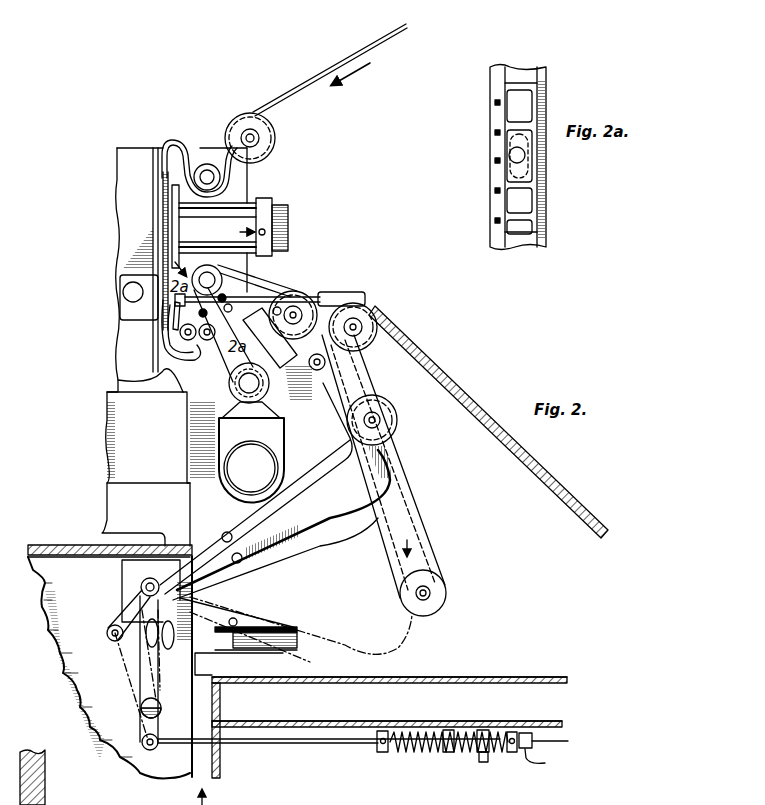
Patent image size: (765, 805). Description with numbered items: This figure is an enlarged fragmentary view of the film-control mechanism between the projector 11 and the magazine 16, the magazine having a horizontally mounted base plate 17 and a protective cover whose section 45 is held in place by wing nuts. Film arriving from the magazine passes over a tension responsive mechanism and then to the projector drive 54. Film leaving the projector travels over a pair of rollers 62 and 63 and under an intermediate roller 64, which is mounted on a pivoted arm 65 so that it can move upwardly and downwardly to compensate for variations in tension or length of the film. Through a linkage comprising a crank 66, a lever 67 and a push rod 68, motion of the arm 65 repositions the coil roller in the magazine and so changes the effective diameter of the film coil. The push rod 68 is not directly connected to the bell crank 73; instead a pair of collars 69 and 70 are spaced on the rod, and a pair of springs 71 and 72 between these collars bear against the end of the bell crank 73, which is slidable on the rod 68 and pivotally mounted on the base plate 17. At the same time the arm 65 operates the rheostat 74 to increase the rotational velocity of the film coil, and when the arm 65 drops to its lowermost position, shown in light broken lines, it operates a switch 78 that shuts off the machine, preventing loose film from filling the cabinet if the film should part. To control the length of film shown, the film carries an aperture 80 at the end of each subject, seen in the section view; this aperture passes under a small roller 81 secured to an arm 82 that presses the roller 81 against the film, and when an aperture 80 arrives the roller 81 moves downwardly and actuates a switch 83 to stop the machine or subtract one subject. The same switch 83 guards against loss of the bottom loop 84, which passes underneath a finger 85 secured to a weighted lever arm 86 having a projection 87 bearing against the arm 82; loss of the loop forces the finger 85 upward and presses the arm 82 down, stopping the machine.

In FIG. 2, the projector 11 is at (100, 463).
In FIG. 2, the magazine 16 is at (480, 675).
In FIG. 2, the base plate 17 is at (412, 721).
In FIG. 2, the cover section 45 is at (534, 676).
In FIG. 2, the projector drive 54 is at (268, 138).
In FIG. 2, the roller 62 is at (295, 292).
In FIG. 2, the roller 63 is at (375, 317).
In FIG. 2, the intermediate roller 64 is at (397, 420).
In FIG. 2, the pivoted arm 65 is at (286, 509).
In FIG. 2, the crank 66 is at (113, 624).
In FIG. 2, the lever 67 is at (141, 704).
In FIG. 2, the push rod 68 is at (286, 745).
In FIG. 2, the collar 69 is at (380, 753).
In FIG. 2, the collar 70 is at (514, 753).
In FIG. 2, the spring 71 is at (405, 753).
In FIG. 2, the spring 72 is at (484, 763).
In FIG. 2, the bell crank 73 is at (448, 753).
In FIG. 2, the rheostat 74 is at (130, 584).
In FIG. 2, the switch 78 is at (274, 627).
In FIG. 2a, the aperture 80 is at (514, 155).
In FIG. 2, the roller 81 is at (237, 328).
In FIG. 2, the arm 82 is at (263, 369).
In FIG. 2, the switch 83 is at (254, 387).
In FIG. 2, the bottom loop 84 is at (166, 363).
In FIG. 2, the finger 85 is at (178, 333).
In FIG. 2, the weighted lever arm 86 is at (336, 295).
In FIG. 2, the projection 87 is at (255, 304).